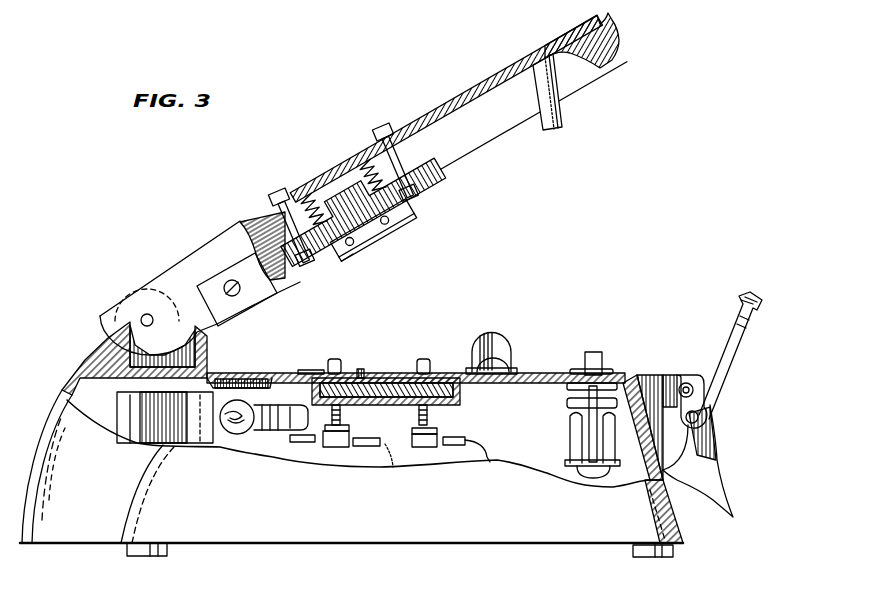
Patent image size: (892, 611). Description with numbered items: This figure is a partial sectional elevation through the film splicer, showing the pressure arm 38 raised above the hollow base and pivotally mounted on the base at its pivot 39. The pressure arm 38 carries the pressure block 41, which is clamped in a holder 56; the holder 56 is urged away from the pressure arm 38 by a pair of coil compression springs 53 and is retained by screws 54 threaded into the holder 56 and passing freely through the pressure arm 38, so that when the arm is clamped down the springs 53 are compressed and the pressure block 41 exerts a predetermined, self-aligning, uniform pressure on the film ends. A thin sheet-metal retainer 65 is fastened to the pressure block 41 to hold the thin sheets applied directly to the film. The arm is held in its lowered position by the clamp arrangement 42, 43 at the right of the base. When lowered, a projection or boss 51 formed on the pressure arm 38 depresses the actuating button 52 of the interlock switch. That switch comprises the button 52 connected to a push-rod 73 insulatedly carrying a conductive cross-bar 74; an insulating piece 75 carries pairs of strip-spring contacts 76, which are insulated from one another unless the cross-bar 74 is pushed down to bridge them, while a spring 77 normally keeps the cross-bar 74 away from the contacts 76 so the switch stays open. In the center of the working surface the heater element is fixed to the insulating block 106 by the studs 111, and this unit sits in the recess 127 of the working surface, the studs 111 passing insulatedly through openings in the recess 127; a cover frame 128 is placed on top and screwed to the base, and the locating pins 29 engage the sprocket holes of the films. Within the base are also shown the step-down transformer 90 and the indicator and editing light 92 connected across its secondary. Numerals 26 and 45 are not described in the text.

The insulating plate 26 is at (232, 386).
The locating pins 29 is at (362, 376).
The pressure arm 38 is at (472, 88).
The pivot of pressure arm 39 is at (147, 314).
The pressure block 41 is at (410, 211).
The clamp arrangement 42 is at (724, 383).
The clamp arrangement 43 is at (713, 460).
The dome 45 is at (505, 327).
The projection or boss 51 is at (567, 124).
The actuating button 52 is at (602, 358).
The coil compression springs 53 is at (340, 163).
The screws 54 is at (270, 192).
The holder 56 is at (301, 268).
The sheet-metal retainer 65 is at (344, 263).
The push-rod 73 is at (576, 426).
The conductive cross-bar 74 is at (571, 403).
The insulating piece 75 is at (560, 477).
The strip-spring contacts 76 is at (607, 440).
The spring 77 is at (582, 370).
The step-down or current transformer 90 is at (150, 393).
The indicator and editing light 92 is at (240, 445).
The insulating block 106 is at (405, 404).
The studs 111 is at (338, 359).
The recess 127 is at (312, 371).
The cover frame 128 is at (452, 378).